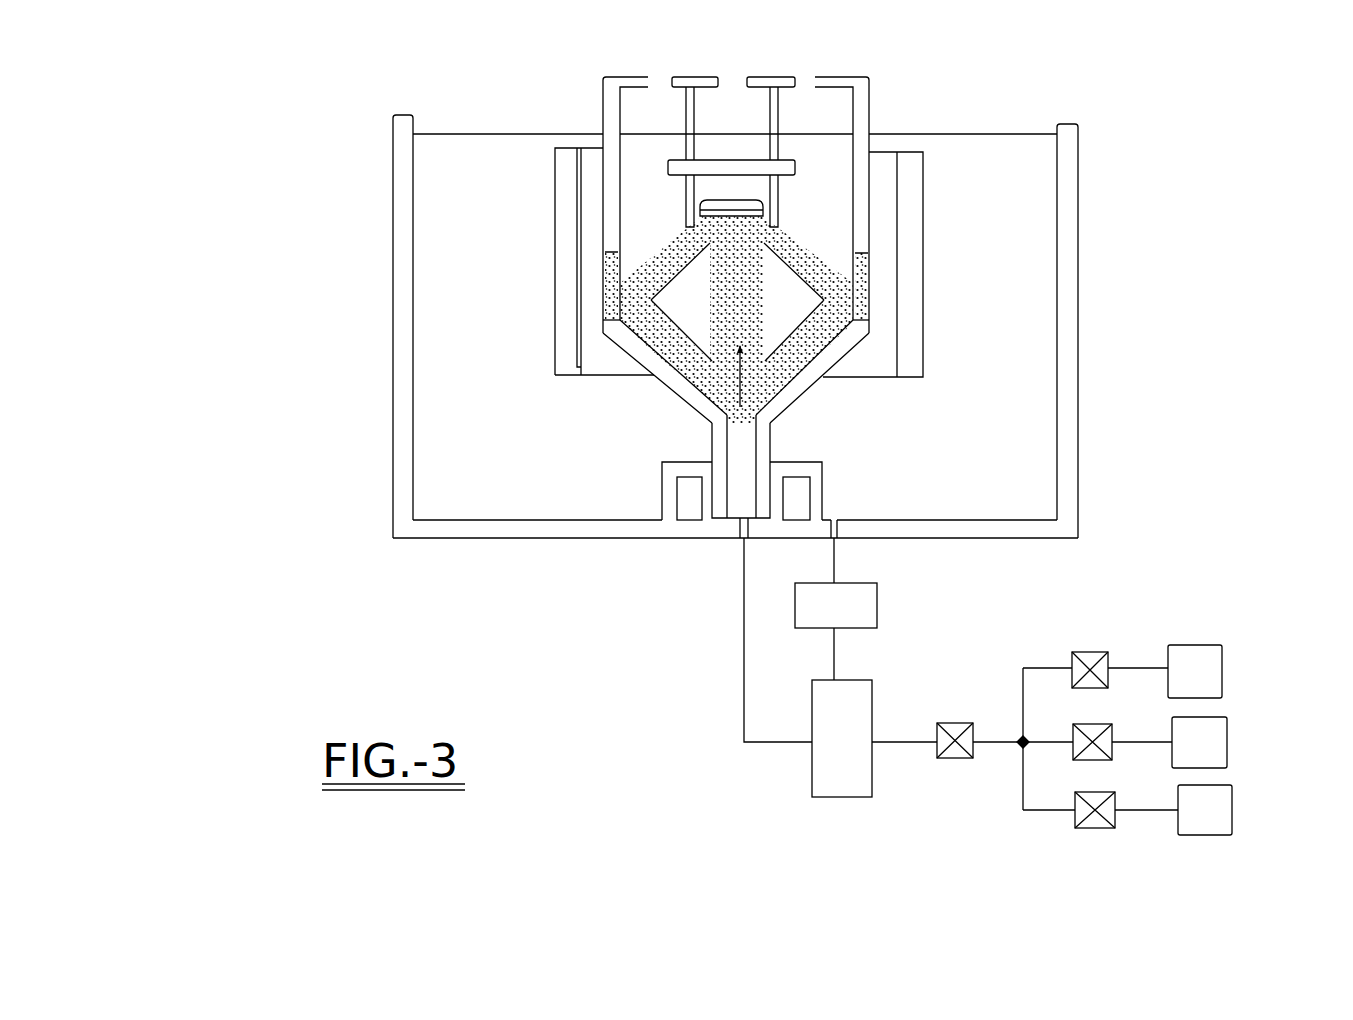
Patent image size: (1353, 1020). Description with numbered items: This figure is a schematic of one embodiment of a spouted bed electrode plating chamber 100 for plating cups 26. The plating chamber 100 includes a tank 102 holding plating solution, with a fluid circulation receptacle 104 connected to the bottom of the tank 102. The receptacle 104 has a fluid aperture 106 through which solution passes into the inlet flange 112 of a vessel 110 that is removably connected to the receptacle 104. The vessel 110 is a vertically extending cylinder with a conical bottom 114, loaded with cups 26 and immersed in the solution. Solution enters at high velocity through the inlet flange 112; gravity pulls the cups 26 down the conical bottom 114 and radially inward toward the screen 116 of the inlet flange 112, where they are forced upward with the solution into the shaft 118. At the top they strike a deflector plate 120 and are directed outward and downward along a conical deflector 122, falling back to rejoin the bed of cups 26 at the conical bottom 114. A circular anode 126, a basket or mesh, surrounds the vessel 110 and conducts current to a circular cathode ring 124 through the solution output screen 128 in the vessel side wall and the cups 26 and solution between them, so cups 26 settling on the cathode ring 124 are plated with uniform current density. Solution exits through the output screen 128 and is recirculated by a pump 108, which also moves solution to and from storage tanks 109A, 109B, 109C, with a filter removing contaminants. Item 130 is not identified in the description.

The plating chamber 100 is at (364, 176).
The tank 102 is at (396, 383).
The fluid circulation receptacle 104 is at (822, 490).
The fluid aperture 106 is at (738, 498).
The pump 108 is at (838, 797).
The tank 109A is at (1222, 670).
The tank 109B is at (1227, 742).
The tank 109C is at (1232, 810).
The vessel 110 is at (838, 80).
The inlet flange 112 is at (763, 435).
The conical bottom 114 is at (653, 372).
The screen 116 is at (727, 420).
The shaft 118 is at (680, 247).
The deflector plate 120 is at (733, 200).
The conical deflector 122 is at (778, 268).
The cathode ring 124 is at (786, 400).
The anode 126 is at (923, 265).
The solution output screen 128 is at (870, 295).
The plates 130 is at (659, 90).
The cups 26 is at (638, 346).